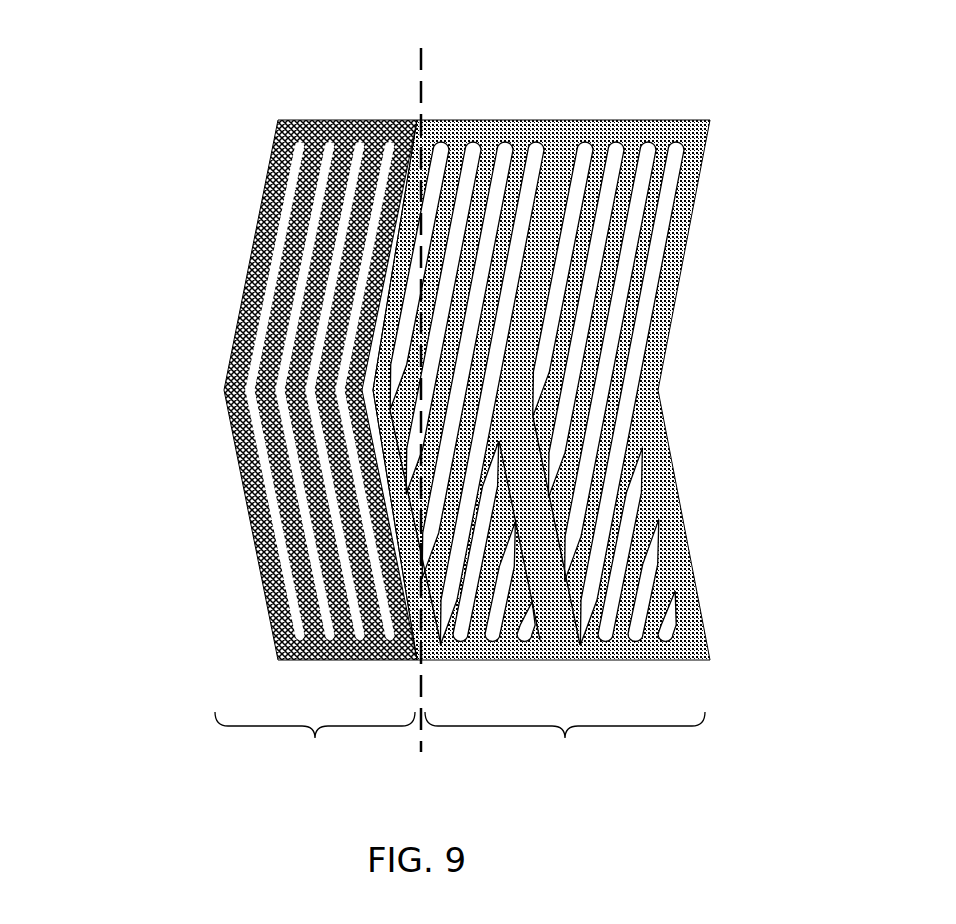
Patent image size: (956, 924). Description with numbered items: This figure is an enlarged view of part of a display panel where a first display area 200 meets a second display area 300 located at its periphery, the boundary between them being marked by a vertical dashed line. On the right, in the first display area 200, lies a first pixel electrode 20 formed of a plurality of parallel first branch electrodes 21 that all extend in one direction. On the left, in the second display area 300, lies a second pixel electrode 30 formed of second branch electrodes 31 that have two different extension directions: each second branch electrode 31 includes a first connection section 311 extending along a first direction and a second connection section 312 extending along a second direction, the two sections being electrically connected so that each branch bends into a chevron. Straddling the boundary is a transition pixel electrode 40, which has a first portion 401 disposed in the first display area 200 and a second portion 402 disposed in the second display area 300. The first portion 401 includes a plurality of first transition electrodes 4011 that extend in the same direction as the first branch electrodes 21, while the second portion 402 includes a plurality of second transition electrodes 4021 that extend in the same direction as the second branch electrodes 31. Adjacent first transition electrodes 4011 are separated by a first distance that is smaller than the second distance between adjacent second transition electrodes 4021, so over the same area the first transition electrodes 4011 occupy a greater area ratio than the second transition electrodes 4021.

The first pixel electrode 20 is at (448, 349).
The first branch electrode 21 is at (636, 275).
The second pixel electrode 30 is at (238, 349).
The second branch electrode 31 is at (180, 391).
The first connection section 311 is at (258, 366).
The second connection section 312 is at (255, 462).
The transition pixel electrode 40 is at (339, 395).
The first portion 401 is at (601, 527).
The first transition electrode 4011 is at (513, 602).
The second portion 402 is at (388, 371).
The second transition electrode 4021 is at (397, 307).
The first display area 200 is at (565, 746).
The second display area 300 is at (315, 746).